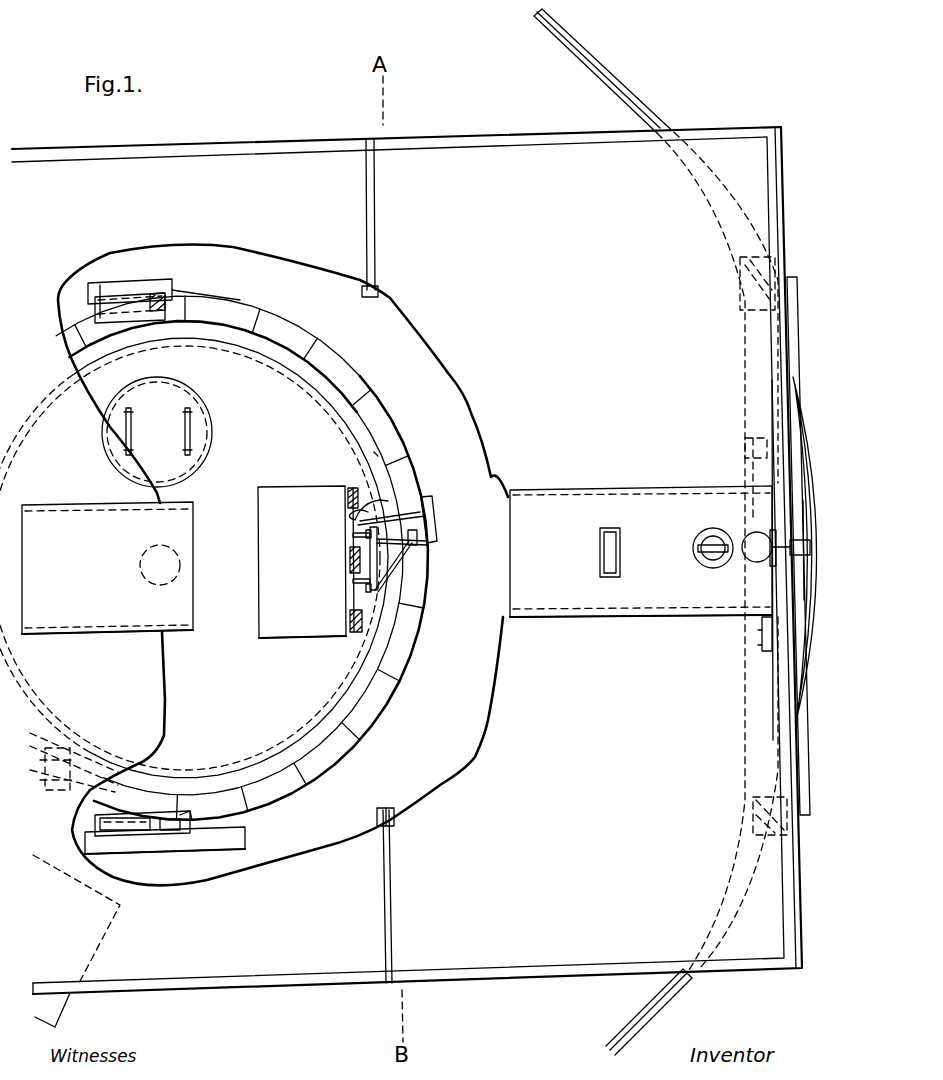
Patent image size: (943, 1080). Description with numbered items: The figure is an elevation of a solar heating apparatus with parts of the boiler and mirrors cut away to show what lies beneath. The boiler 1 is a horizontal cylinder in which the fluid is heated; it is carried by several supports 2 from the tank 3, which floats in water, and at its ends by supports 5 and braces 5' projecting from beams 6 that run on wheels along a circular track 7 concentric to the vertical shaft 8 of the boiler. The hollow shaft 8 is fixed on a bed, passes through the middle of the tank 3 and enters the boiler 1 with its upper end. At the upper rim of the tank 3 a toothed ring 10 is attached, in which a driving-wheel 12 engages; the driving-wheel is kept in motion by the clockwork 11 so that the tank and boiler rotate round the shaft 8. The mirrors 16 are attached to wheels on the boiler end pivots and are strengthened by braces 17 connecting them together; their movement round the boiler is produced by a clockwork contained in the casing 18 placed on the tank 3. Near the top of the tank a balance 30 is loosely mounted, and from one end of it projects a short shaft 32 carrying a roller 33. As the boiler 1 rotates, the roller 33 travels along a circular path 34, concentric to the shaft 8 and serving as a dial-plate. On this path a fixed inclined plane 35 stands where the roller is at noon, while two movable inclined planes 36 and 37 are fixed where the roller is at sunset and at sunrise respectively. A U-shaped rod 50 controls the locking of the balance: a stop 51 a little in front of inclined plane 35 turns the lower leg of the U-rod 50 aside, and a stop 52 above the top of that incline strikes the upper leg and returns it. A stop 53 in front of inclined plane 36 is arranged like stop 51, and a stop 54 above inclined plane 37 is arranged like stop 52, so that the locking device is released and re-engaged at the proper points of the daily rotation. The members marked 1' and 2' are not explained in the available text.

The boiler 1 is at (641, 551).
The rail 1' is at (810, 546).
The supports 2 is at (343, 521).
The block 2' is at (358, 611).
The tank 3 is at (283, 565).
The supports 5 is at (741, 548).
The braces 5' is at (766, 645).
The beams 6 is at (791, 547).
The circular track 7 is at (600, 70).
The vertical shaft 8 is at (107, 568).
The toothed ring 10 is at (216, 770).
The clockwork 11 is at (47, 999).
The driving-wheel 12 is at (75, 762).
The mirrors 16 is at (407, 577).
The braces 17 is at (366, 218).
The casing 18 is at (306, 562).
The balance 30 is at (377, 550).
The short shaft 32 is at (402, 531).
The roller 33 is at (412, 546).
The circular path 34 is at (392, 692).
The inclined plane 35 is at (432, 544).
The movable inclined plane 36 is at (148, 802).
The movable inclined plane 37 is at (118, 316).
The U-shaped rod 50 is at (370, 499).
The stop 51 is at (374, 452).
The stop 52 is at (391, 511).
The stop 53 is at (184, 812).
The stop 54 is at (155, 312).